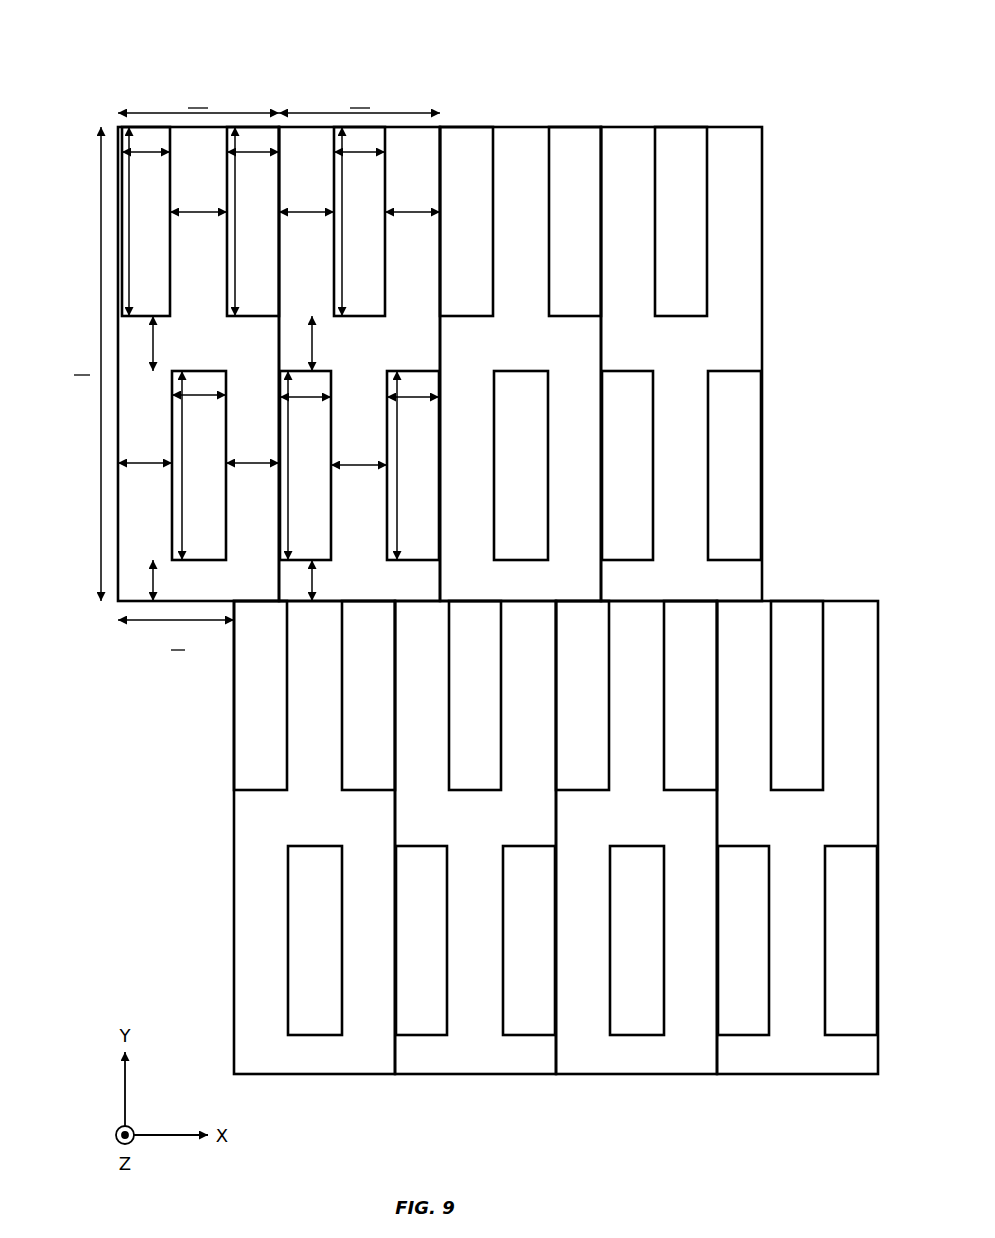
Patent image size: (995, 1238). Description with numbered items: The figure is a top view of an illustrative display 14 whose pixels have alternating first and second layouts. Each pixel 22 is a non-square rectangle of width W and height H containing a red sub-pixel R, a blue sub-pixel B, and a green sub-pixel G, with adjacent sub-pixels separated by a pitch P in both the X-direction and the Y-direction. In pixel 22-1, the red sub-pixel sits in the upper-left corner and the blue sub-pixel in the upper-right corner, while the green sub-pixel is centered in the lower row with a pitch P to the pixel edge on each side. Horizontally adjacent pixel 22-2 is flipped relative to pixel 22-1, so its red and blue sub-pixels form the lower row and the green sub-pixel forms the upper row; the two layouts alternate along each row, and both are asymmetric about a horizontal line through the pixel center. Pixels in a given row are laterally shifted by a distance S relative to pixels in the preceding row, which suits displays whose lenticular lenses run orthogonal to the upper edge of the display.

The display pixel array 14 is at (96, 77).
The pixel 22-1 is at (118, 520).
The pixel 22-2 is at (407, 127).
The pixel 22 is at (522, 127).